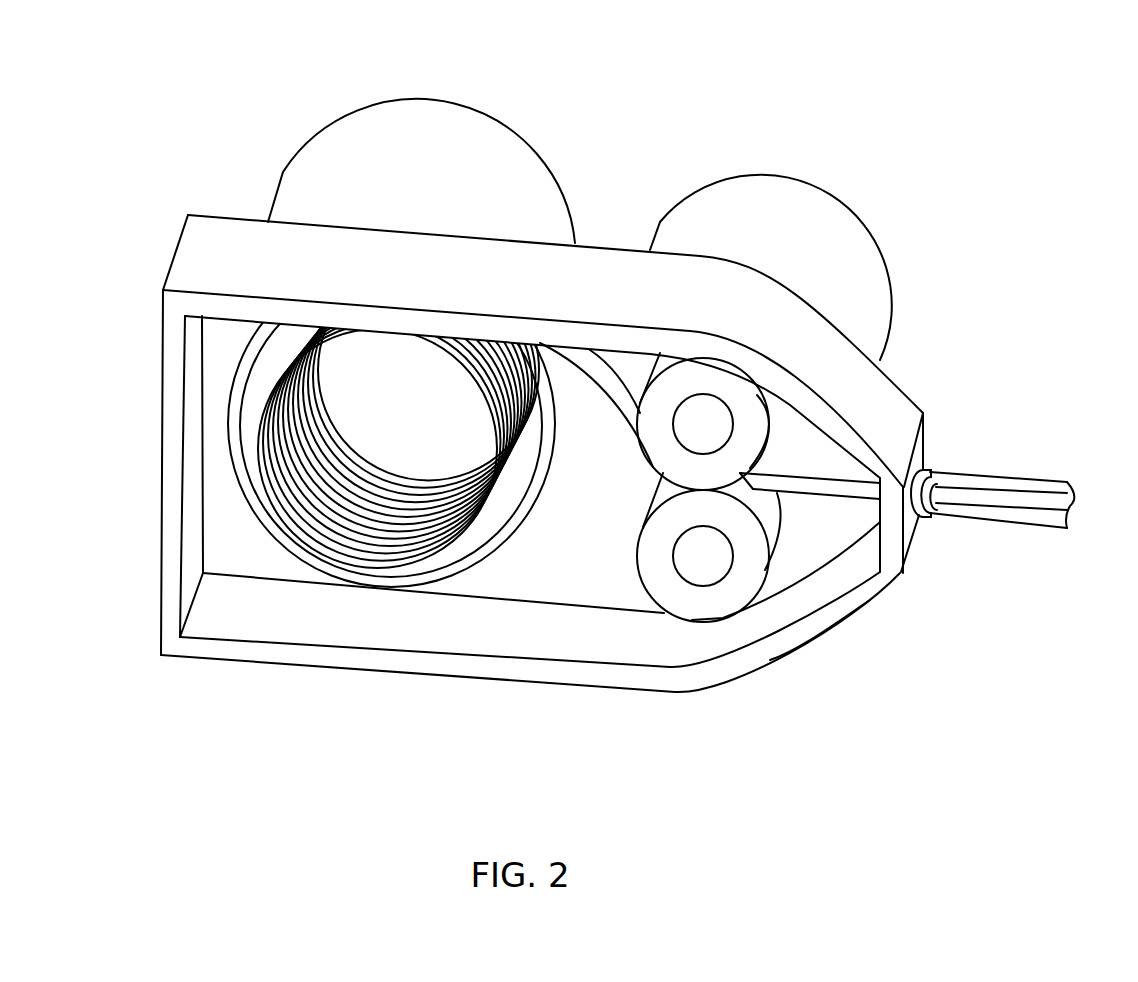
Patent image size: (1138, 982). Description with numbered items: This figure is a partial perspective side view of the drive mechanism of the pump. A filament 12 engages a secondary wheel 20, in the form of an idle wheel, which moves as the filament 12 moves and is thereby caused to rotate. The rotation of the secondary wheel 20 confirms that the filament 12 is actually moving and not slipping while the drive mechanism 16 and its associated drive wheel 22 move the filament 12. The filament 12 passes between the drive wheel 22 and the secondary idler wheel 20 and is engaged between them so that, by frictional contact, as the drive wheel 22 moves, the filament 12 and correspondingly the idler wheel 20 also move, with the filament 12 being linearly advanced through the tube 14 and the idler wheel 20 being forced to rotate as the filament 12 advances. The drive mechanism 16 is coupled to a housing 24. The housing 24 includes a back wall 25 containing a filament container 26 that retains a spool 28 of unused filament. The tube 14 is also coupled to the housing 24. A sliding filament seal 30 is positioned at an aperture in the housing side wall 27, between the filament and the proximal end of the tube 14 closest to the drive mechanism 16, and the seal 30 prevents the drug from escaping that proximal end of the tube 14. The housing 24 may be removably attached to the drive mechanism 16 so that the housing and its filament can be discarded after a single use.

The filament 12 is at (813, 490).
The tube 14 is at (980, 470).
The drive mechanism 16 is at (820, 213).
The secondary wheel 20 is at (740, 587).
The drive wheel 22 is at (723, 393).
The housing 24 is at (896, 398).
The back wall 25 is at (557, 577).
The filament container 26 is at (477, 155).
The housing side wall 27 is at (715, 678).
The spool 28 is at (338, 548).
The sliding filament seal 30 is at (930, 510).